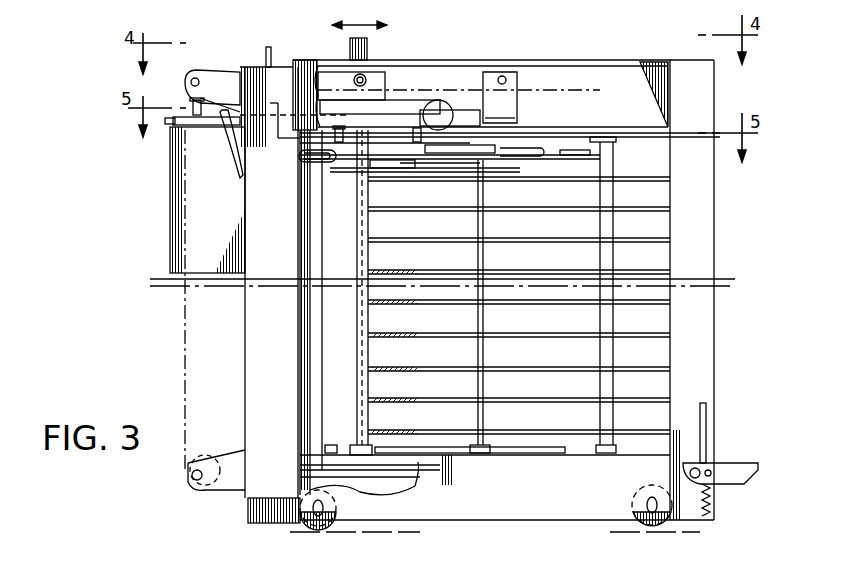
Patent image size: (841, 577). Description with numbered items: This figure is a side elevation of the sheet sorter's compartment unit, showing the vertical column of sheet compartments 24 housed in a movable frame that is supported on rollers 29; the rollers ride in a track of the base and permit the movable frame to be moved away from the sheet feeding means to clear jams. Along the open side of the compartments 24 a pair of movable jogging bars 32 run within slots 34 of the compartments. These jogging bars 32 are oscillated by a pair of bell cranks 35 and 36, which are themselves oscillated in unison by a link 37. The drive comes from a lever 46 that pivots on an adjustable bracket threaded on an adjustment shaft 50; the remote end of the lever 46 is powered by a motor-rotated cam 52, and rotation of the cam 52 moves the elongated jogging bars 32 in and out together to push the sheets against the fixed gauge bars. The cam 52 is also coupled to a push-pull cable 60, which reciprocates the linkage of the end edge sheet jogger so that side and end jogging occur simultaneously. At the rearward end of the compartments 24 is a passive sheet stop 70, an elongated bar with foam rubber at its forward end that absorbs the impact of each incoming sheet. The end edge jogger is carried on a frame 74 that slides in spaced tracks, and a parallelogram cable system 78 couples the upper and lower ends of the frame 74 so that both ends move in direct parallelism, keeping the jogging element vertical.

The sheet compartments 24 is at (663, 320).
The rollers 29 is at (342, 528).
The movable jogging bars 32 is at (606, 380).
The slots 34 is at (642, 205).
The bell crank 35 is at (450, 172).
The bell crank 36 is at (372, 172).
The link 37 is at (332, 178).
The lever 46 is at (478, 112).
The adjustment shaft 50 is at (440, 100).
The cam 52 is at (178, 124).
The push-pull cable 60 is at (236, 146).
The passive sheet stop 70 is at (351, 395).
The frame 74 is at (380, 60).
The parallelogram cable system 78 is at (185, 364).